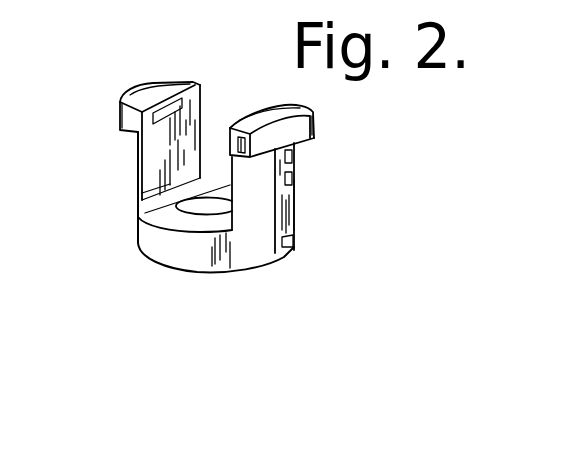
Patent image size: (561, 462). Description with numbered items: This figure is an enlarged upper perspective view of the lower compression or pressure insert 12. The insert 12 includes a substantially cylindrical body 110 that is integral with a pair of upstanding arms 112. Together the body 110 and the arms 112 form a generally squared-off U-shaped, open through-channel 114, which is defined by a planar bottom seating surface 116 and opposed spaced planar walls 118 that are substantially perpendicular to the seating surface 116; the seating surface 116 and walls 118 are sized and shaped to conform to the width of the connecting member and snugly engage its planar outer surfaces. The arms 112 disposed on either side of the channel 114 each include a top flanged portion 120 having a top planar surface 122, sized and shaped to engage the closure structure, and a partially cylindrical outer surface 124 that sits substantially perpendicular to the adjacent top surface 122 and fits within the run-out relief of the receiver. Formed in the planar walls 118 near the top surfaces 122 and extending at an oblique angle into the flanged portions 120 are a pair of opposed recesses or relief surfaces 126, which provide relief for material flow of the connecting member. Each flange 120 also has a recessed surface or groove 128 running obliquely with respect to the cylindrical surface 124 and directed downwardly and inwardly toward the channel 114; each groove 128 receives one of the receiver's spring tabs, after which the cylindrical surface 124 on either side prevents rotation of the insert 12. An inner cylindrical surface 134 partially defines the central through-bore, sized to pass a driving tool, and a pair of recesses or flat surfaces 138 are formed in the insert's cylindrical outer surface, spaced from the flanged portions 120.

The compression insert 12 is at (297, 218).
The cylindrical body 110 is at (285, 247).
The upstanding arms 112 is at (138, 170).
The through-channel 114 is at (228, 105).
The bottom seating surface 116 is at (167, 226).
The planar walls 118 is at (147, 183).
The top flanged portion 120 is at (121, 123).
The top planar surface 122 is at (173, 83).
The partially cylindrical outer surface 124 is at (120, 104).
The recess or relief surface 126 is at (195, 93).
The recessed surface or groove 128 is at (254, 192).
The inner cylindrical surface 134 is at (207, 213).
The recesses or flat surfaces 138 is at (296, 183).